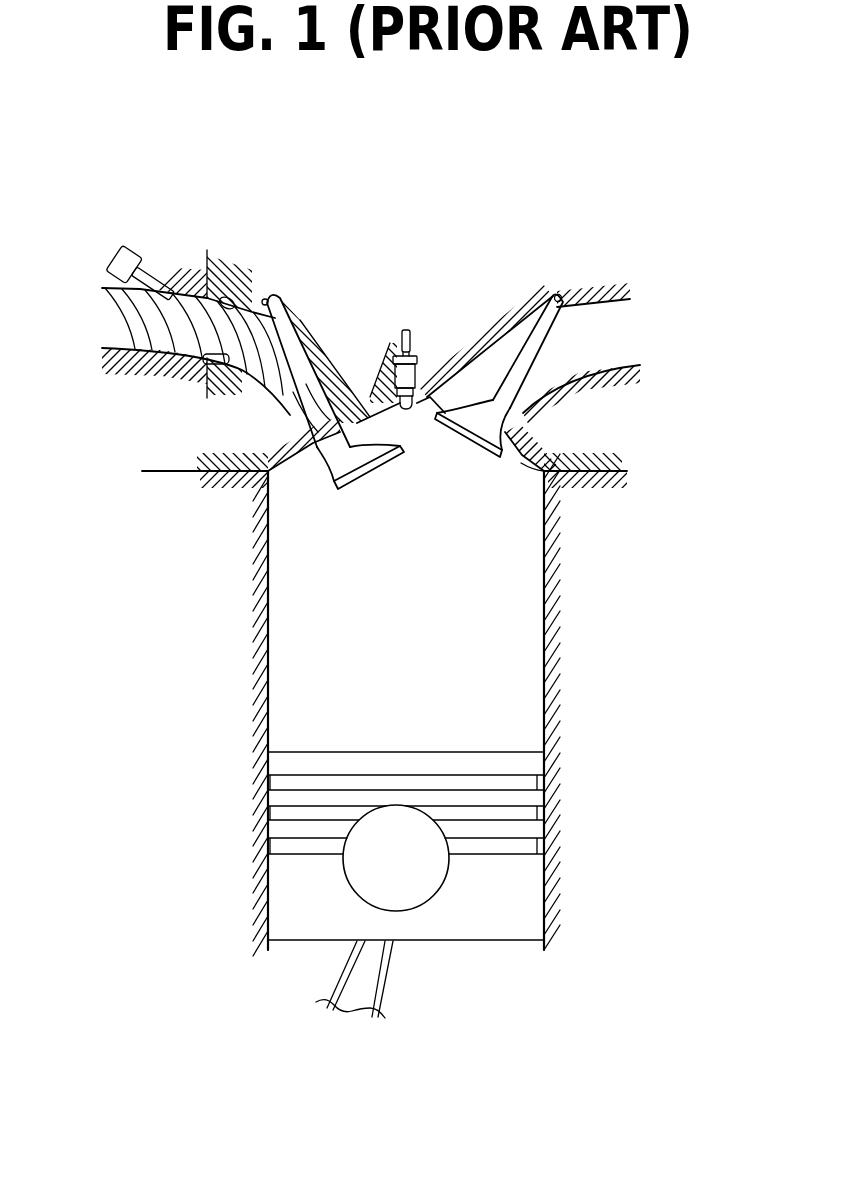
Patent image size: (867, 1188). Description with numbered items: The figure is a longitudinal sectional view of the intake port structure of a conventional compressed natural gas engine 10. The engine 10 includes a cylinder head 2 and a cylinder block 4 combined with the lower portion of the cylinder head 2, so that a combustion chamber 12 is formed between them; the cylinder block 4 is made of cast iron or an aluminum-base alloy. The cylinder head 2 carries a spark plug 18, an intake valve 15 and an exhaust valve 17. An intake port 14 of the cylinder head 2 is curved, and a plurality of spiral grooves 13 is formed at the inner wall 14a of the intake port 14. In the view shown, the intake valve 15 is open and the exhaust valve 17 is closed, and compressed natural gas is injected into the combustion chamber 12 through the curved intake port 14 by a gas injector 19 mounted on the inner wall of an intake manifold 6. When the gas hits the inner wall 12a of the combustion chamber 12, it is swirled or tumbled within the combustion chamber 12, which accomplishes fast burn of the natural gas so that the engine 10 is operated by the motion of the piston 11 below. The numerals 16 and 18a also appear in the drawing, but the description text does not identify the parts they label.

The engine 10 is at (397, 133).
The cylinder head 2 is at (597, 415).
The cylinder block 4 is at (598, 752).
The intake manifold 6 is at (160, 317).
The piston 11 is at (543, 833).
The combustion chamber 12 is at (507, 620).
The inner wall of the combustion chamber 12a is at (521, 463).
The spiral grooves 13 is at (213, 297).
The intake port 14 is at (290, 390).
The inner wall of the intake port 14a is at (213, 358).
The intake valve 15 is at (360, 460).
The exhaust valve guide 16 is at (573, 337).
The exhaust valve 17 is at (512, 420).
The spark plug 18 is at (411, 340).
The injection nozzle 18a is at (421, 397).
The gas injector 19 is at (141, 258).